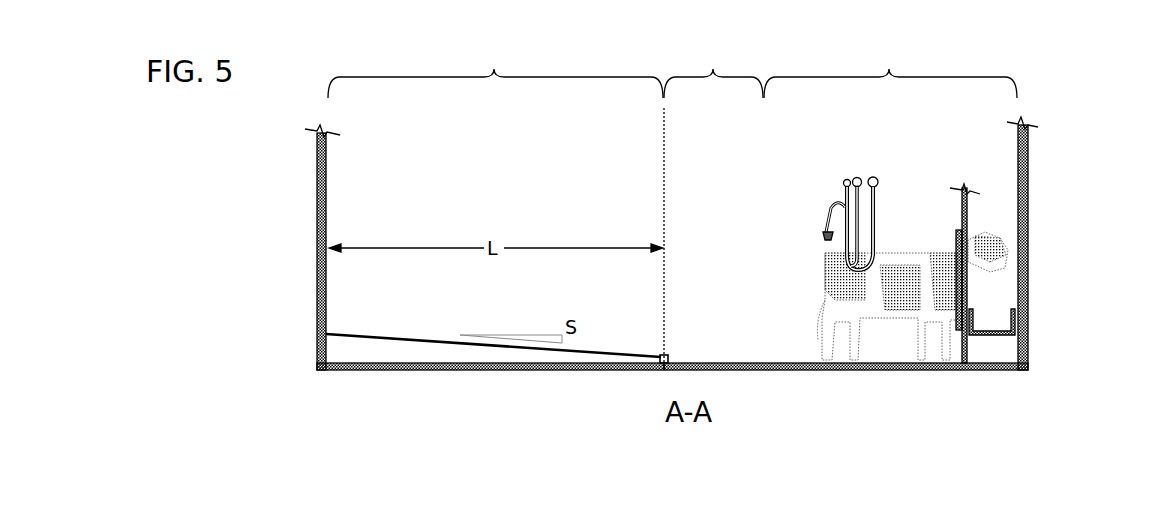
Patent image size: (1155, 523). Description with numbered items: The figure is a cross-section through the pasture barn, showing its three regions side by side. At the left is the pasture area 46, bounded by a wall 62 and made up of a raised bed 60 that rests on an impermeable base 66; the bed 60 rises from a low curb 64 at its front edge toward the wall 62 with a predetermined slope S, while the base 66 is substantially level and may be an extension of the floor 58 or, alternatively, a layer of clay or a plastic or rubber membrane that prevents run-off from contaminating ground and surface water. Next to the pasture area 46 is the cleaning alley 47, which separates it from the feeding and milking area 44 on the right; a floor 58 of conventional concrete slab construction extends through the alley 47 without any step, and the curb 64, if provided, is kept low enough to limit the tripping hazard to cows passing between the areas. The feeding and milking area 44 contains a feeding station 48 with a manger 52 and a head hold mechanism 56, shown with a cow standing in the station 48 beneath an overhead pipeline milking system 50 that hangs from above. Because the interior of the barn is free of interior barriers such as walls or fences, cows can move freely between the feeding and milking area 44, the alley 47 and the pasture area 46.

The feeding and milking area 44 is at (890, 71).
The pasture area 46 is at (495, 71).
The cleaning alley 47 is at (713, 71).
The feeding station 48 is at (985, 165).
The overhead pipeline milking system 50 is at (841, 173).
The manger 52 is at (998, 320).
The head hold mechanism 56 is at (957, 232).
The floor 58 is at (757, 353).
The raised bed 60 is at (399, 337).
The wall 62 is at (326, 202).
The low curb 64 is at (666, 354).
The impermeable base 66 is at (471, 370).